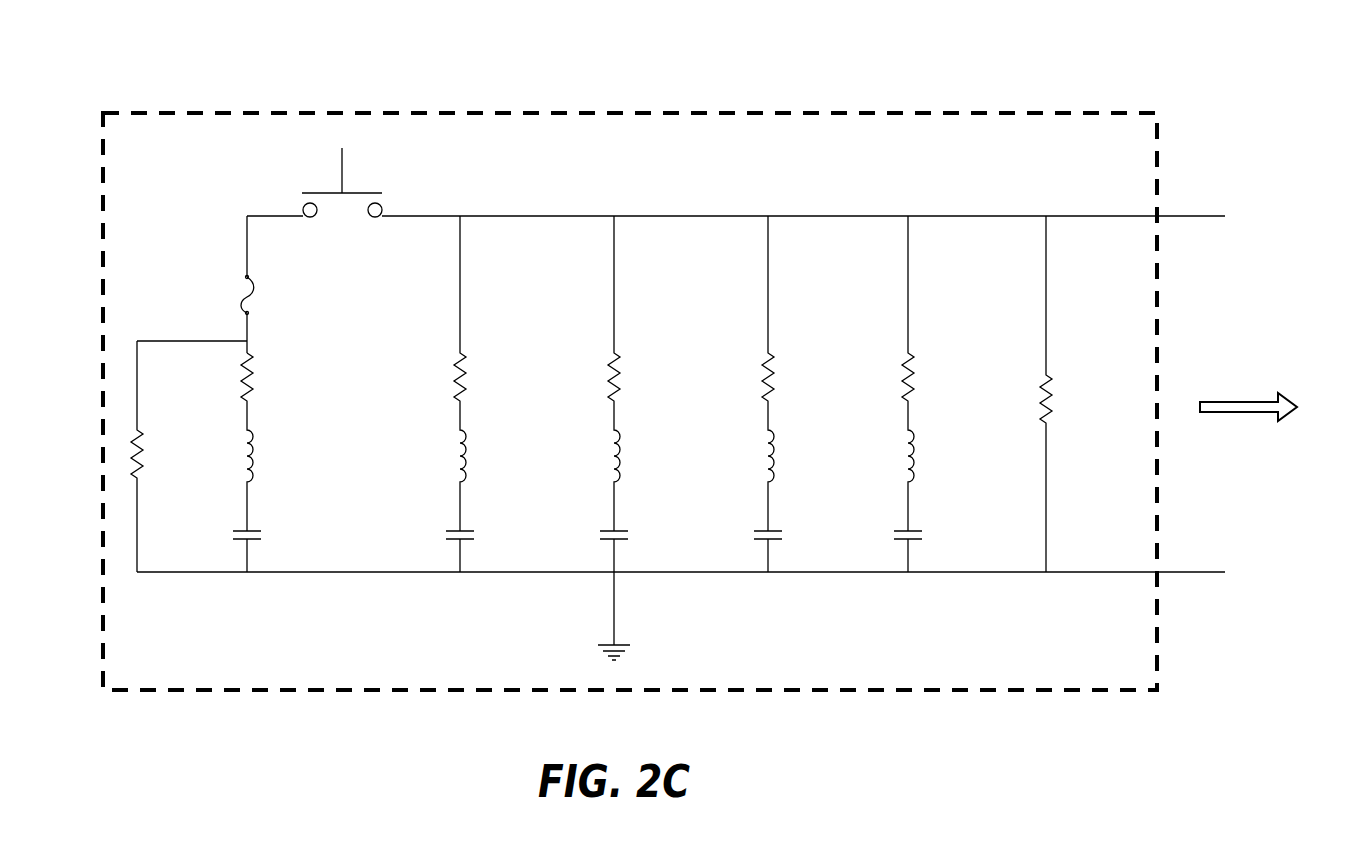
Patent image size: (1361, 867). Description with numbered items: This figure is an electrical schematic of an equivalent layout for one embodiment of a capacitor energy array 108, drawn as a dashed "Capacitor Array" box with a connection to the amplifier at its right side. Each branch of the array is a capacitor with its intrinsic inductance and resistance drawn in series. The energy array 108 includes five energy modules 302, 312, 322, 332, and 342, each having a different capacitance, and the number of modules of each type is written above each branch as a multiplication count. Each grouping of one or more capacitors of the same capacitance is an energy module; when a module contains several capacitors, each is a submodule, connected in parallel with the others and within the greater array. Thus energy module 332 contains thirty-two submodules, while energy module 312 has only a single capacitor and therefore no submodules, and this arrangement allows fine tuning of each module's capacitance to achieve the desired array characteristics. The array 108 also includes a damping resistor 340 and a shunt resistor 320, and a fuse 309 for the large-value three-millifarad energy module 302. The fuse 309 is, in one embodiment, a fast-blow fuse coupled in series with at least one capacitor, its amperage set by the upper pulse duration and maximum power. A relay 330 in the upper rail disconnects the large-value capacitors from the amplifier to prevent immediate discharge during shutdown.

The energy array 108 is at (1206, 56).
The energy module 302 is at (258, 600).
The fuse 309 is at (244, 292).
The energy module 312 is at (470, 600).
The shunt resistor 320 is at (1051, 421).
The energy module 322 is at (654, 600).
The relay 330 is at (357, 187).
The energy module 332 is at (779, 600).
The damping resistor 340 is at (145, 473).
The energy module 342 is at (918, 600).